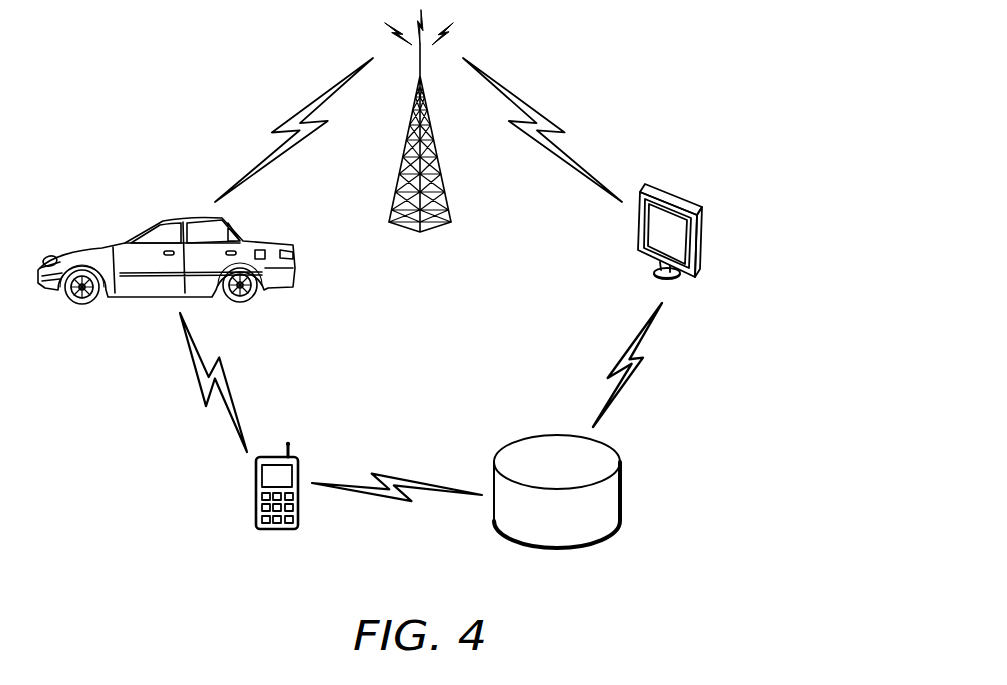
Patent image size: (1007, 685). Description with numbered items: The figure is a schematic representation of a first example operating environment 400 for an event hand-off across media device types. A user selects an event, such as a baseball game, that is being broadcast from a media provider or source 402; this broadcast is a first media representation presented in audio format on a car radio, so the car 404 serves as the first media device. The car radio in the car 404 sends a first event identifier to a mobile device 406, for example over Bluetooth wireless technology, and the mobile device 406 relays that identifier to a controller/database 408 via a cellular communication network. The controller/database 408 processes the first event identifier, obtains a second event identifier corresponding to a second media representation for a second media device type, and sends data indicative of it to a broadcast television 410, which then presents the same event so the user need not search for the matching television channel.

The operating environment 400 is at (720, 597).
The media provider or source 402 is at (440, 234).
The car 404 is at (131, 226).
The mobile device 406 is at (256, 491).
The controller/database 408 is at (521, 437).
The broadcast television 410 is at (672, 196).